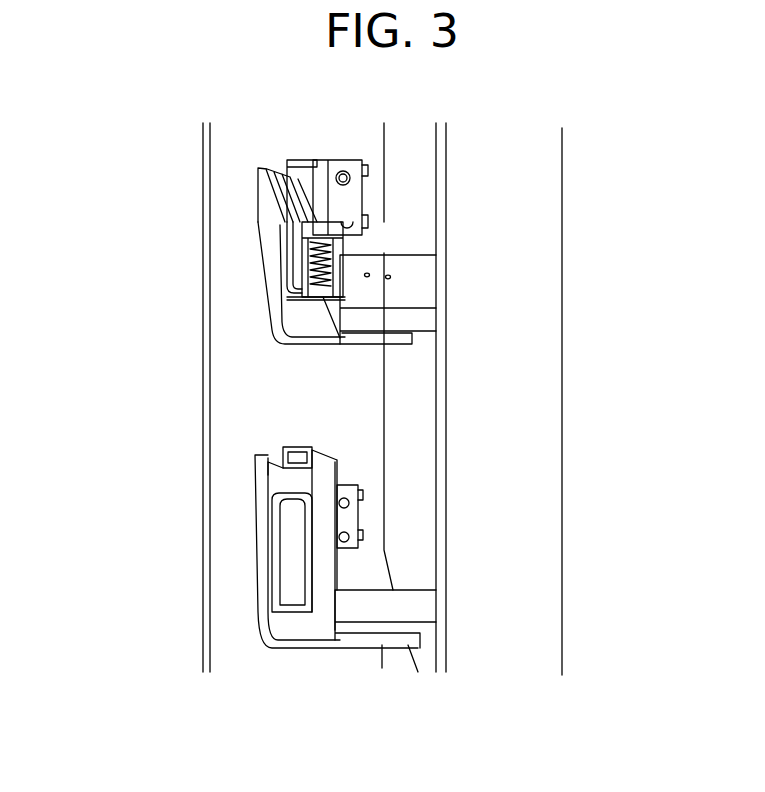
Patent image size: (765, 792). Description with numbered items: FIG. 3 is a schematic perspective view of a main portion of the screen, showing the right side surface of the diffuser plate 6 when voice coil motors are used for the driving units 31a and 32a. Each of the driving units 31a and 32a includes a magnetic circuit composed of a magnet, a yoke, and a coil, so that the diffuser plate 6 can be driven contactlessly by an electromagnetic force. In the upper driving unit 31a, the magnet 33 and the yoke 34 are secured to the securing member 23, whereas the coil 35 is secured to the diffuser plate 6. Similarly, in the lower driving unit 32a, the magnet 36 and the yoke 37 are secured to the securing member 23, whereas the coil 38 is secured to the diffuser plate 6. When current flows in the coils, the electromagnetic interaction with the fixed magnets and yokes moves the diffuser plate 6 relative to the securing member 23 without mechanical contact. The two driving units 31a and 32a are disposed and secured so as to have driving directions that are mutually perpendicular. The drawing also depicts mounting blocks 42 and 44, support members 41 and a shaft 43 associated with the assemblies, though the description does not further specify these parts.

The diffuser plate 6 is at (203, 127).
The securing member 23 is at (548, 567).
The driving unit 31a is at (228, 210).
The driving unit 32a is at (233, 538).
The magnet 33 is at (290, 254).
The yoke 34 is at (280, 273).
The coil 35 is at (343, 297).
The magnet 36 is at (258, 468).
The yoke 37 is at (283, 600).
The coil 38 is at (337, 460).
The support member 41 is at (425, 320).
The upper mounting block 42 is at (352, 197).
The shaft 43 is at (390, 647).
The lower mounting block 44 is at (353, 517).